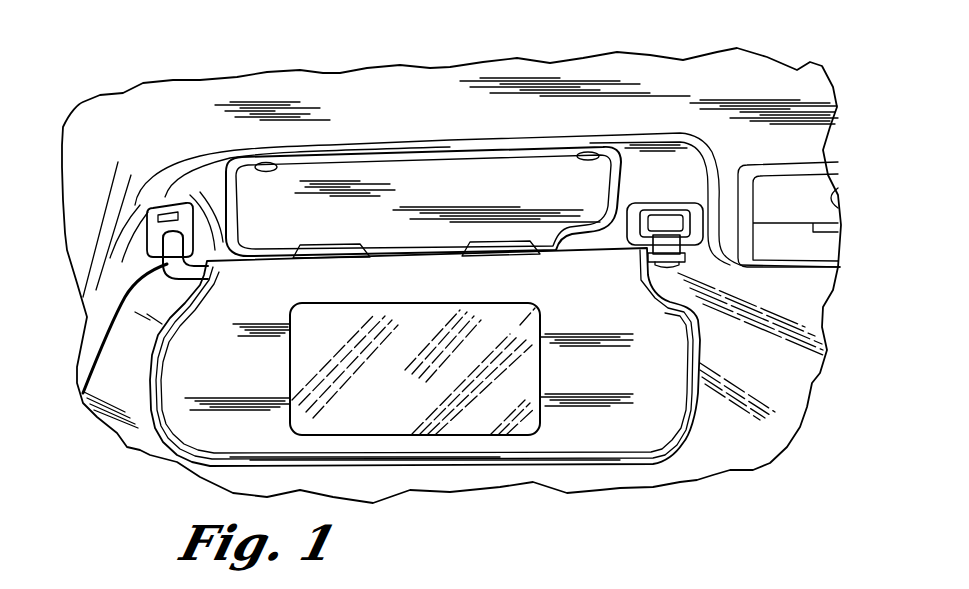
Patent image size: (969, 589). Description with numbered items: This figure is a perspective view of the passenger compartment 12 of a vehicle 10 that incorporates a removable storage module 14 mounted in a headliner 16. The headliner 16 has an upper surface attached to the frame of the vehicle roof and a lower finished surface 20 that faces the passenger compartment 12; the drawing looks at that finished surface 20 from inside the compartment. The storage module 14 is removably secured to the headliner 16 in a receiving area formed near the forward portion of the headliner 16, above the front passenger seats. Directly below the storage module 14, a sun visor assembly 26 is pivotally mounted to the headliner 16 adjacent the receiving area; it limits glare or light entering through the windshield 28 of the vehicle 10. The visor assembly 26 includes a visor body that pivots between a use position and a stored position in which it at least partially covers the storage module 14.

The vehicle 10 is at (850, 117).
The passenger compartment 12 is at (795, 313).
The storage module 14 is at (552, 132).
The headliner 16 is at (107, 153).
The lower finished surface 20 is at (745, 93).
The sun visor assembly 26 is at (153, 443).
The windshield 28 is at (776, 375).